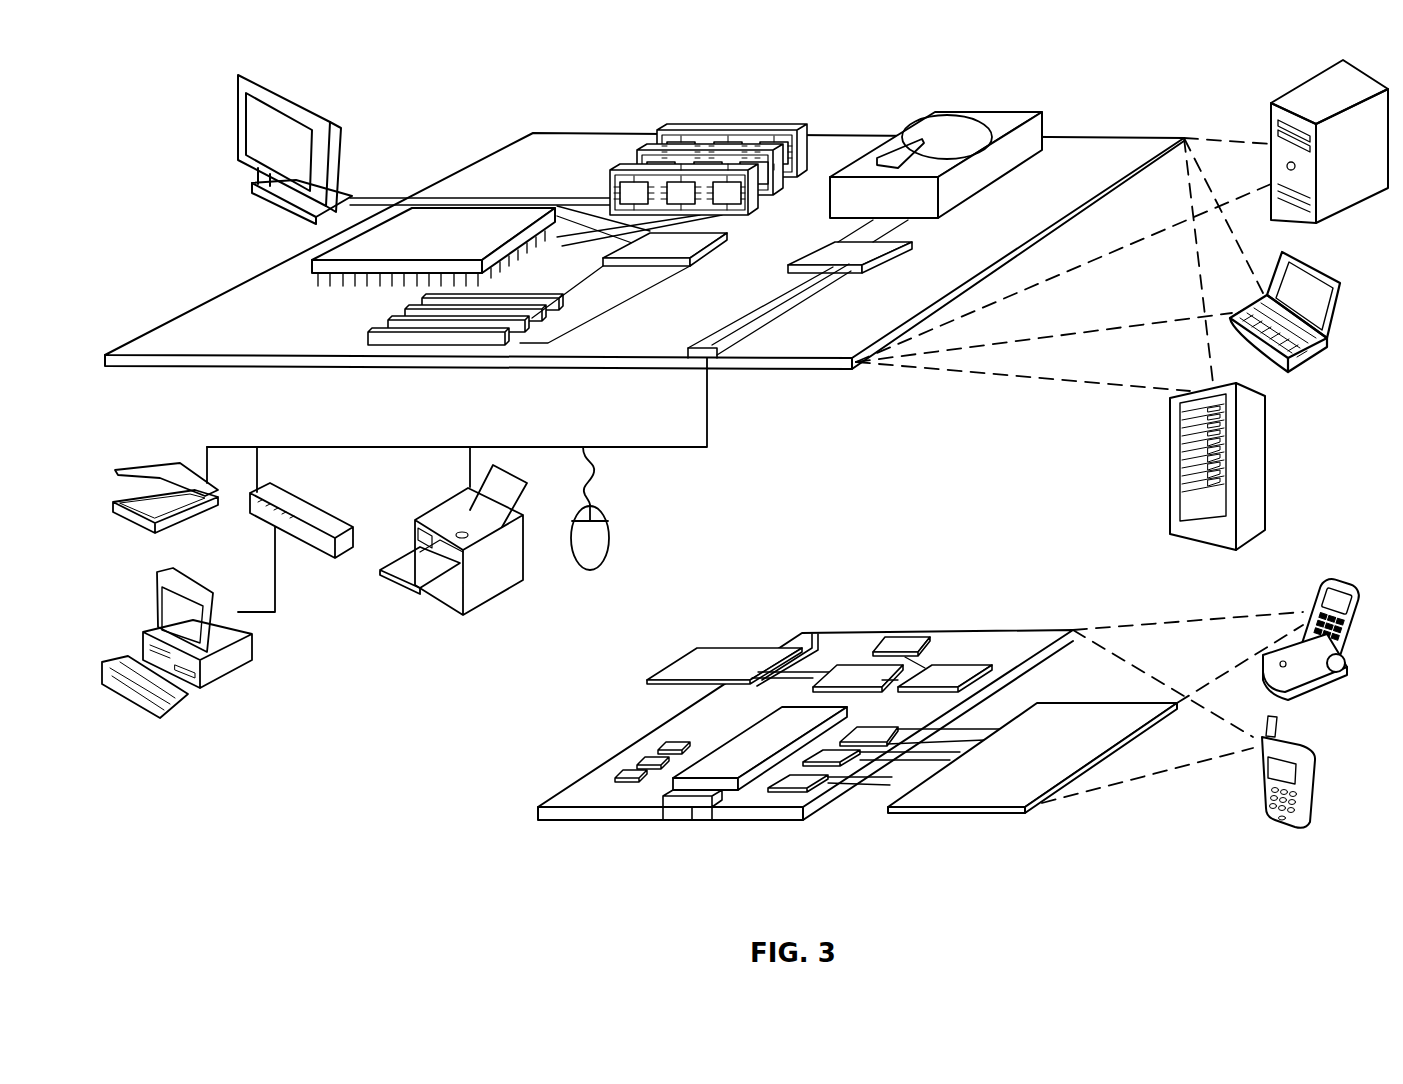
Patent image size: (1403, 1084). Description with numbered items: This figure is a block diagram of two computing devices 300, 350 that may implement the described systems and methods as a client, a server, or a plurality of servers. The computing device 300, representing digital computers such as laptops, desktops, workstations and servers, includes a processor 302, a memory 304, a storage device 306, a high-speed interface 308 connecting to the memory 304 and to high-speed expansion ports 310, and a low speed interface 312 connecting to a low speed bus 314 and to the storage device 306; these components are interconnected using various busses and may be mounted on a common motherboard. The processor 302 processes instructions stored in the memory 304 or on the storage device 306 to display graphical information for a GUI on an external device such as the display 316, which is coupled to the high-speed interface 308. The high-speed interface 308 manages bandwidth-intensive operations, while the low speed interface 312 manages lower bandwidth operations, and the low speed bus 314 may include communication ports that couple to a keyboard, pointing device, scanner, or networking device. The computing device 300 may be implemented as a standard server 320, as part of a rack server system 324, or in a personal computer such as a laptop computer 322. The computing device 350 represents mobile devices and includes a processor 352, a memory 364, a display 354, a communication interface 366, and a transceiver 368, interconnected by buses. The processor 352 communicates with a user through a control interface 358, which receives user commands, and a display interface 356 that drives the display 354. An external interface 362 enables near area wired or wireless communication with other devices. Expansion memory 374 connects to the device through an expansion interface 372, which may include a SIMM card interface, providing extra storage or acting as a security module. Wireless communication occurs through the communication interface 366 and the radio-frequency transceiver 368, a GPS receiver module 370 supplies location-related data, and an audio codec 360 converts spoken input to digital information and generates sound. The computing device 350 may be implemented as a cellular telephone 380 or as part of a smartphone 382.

The computing device 300 is at (453, 112).
The processor 302 is at (312, 265).
The memory 304 is at (673, 128).
The storage device 306 is at (928, 114).
The high-speed interface 308 is at (640, 248).
The high-speed expansion ports 310 is at (395, 326).
The low speed interface 312 is at (830, 262).
The low speed bus 314 is at (710, 353).
The display 316 is at (240, 77).
The standard server 320 is at (1271, 118).
The laptop computer 322 is at (1341, 292).
The rack server system 324 is at (1170, 494).
The computing device 350 is at (516, 819).
The processor 352 is at (730, 770).
The display 354 is at (990, 794).
The display interface 356 is at (803, 784).
The control interface 358 is at (840, 762).
The audio codec 360 is at (868, 738).
The external interface 362 is at (692, 812).
The memory 364 is at (636, 764).
The communication interface 366 is at (860, 673).
The transceiver 368 is at (945, 673).
The GPS receiver module 370 is at (915, 637).
The expansion interface 372 is at (783, 644).
The expansion memory 374 is at (700, 650).
The cellular telephone 380 is at (1330, 589).
The smartphone 382 is at (1258, 775).